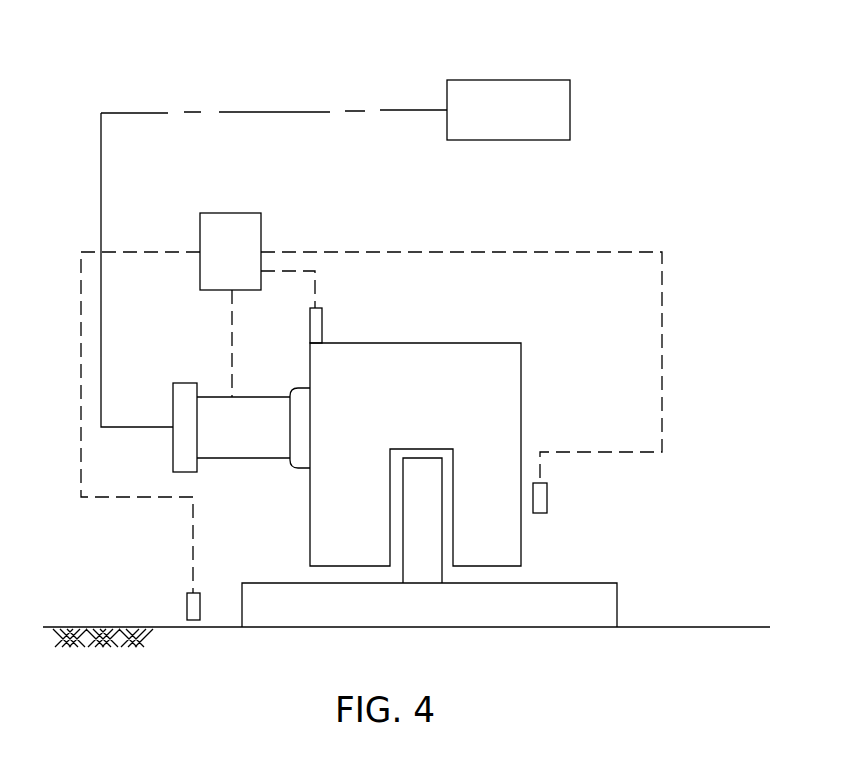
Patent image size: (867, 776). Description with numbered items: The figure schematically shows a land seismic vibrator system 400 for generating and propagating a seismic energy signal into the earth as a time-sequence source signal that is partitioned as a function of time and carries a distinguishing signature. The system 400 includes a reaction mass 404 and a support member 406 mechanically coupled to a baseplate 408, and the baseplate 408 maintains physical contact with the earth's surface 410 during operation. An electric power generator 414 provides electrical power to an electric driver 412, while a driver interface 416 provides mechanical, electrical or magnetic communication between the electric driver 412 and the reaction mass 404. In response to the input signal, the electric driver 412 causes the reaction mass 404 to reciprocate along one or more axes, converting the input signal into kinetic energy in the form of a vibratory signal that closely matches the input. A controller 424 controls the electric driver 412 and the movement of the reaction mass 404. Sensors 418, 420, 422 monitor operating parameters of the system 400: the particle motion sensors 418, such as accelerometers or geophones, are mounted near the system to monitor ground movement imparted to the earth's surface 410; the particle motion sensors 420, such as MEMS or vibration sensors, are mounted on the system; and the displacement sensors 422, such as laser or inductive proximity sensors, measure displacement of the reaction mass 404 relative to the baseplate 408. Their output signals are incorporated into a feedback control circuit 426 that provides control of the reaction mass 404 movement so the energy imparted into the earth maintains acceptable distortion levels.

The land seismic vibrator system 400 is at (638, 92).
The reaction mass 404 is at (521, 378).
The support member 406 is at (443, 573).
The baseplate 408 is at (602, 583).
The earth's surface 410 is at (98, 627).
The electric driver 412 is at (242, 458).
The electric power generator 414 is at (523, 80).
The driver interface 416 is at (292, 390).
The particle motion sensors 418 is at (187, 608).
The particle motion sensors 420 is at (548, 495).
The displacement sensors 422 is at (322, 325).
The controller 424 is at (236, 213).
The feedback control circuit 426 is at (632, 249).